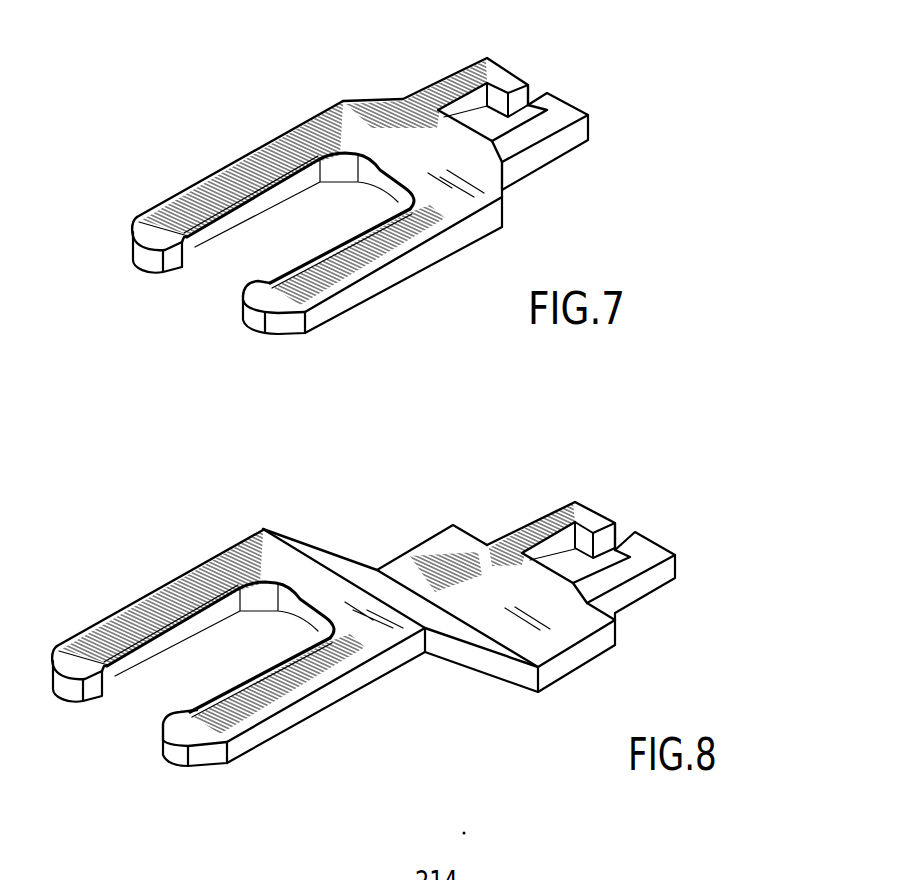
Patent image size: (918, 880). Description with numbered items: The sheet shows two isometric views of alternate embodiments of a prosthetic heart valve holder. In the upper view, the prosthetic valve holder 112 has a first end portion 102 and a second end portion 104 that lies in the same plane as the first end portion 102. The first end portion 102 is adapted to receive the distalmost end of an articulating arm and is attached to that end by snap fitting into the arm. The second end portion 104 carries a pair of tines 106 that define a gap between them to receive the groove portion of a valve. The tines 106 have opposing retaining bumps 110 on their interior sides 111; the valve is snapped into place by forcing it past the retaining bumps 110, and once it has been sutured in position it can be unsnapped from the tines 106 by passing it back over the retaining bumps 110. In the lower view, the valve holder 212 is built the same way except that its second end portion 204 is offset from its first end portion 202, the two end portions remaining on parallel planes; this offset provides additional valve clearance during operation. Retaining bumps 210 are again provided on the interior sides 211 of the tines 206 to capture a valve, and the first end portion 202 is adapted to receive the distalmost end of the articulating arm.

In FIG. 7, the first end portion 102 is at (490, 65).
In FIG. 7, the second end portion 104 is at (258, 327).
In FIG. 7, the tines 106 is at (340, 240).
In FIG. 7, the retaining bumps 110 is at (243, 298).
In FIG. 7, the interior sides 111 is at (288, 273).
In FIG. 7, the prosthetic valve holder 112 is at (674, 110).
In FIG. 8, the first end portion 202 is at (574, 505).
In FIG. 8, the second end portion 204 is at (72, 690).
In FIG. 8, the tines 206 is at (300, 667).
In FIG. 8, the retaining bumps 210 is at (165, 735).
In FIG. 8, the interior sides 211 is at (205, 619).
In FIG. 8, the valve holder 212 is at (712, 541).